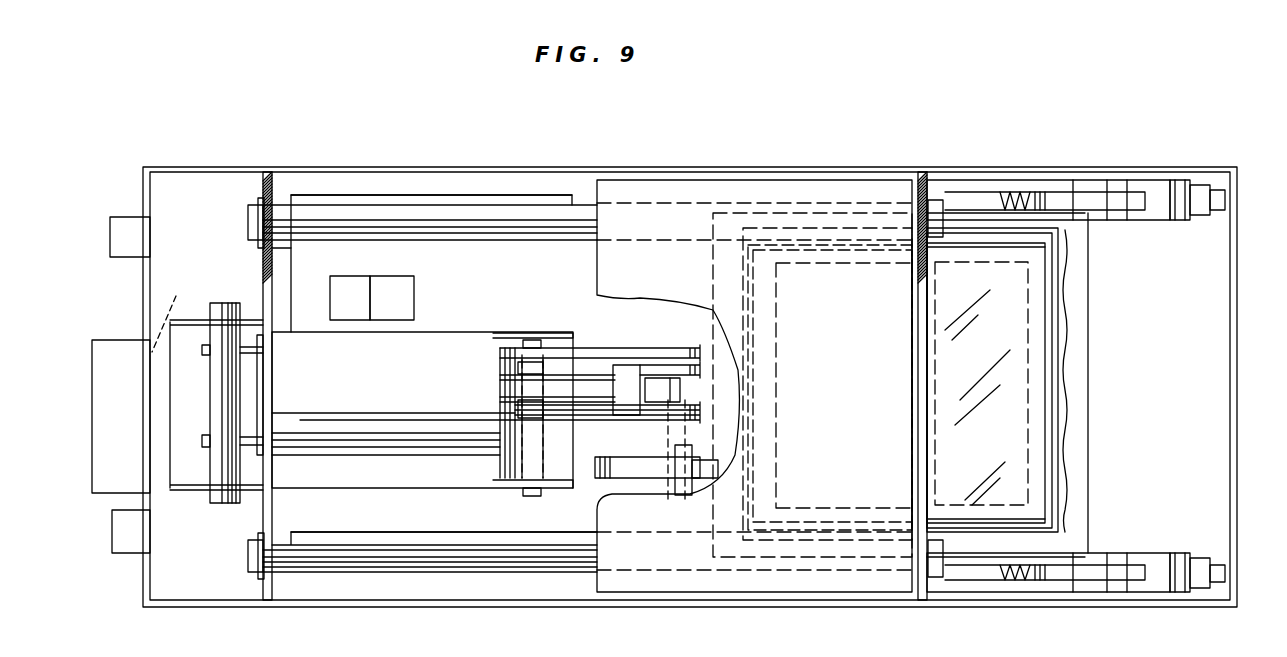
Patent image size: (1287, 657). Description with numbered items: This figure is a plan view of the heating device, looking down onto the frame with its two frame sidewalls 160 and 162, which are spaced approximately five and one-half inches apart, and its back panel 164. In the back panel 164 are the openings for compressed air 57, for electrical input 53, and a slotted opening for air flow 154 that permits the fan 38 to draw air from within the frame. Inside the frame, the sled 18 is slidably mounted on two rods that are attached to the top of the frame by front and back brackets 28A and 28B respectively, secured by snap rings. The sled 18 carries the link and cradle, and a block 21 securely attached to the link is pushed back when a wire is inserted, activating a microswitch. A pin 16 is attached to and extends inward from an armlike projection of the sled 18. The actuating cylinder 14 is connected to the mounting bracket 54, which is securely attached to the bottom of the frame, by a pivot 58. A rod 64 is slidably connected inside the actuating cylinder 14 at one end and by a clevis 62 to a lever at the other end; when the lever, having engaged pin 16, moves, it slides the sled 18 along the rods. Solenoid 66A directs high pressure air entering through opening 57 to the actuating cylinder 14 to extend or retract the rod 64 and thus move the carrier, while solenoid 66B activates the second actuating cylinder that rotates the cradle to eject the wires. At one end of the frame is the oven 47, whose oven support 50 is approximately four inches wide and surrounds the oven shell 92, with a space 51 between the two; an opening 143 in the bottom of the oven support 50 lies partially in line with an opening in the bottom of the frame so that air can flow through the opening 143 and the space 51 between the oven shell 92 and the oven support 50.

The actuating cylinder 14 is at (446, 346).
The pin 16 is at (686, 450).
The sled 18 is at (775, 193).
The block 21 is at (1037, 212).
The front bracket 28A is at (924, 182).
The back bracket 28B is at (273, 182).
The fan 38 is at (120, 350).
The oven 47 is at (1082, 467).
The oven support 50 is at (1065, 362).
The space 51 is at (1060, 320).
The opening for electrical input 53 is at (125, 234).
The mounting bracket 54 is at (184, 495).
The opening for compressed air 57 is at (123, 548).
The pivot 58 is at (223, 503).
The clevis 62 is at (636, 375).
The rod 64 is at (580, 382).
The solenoid 66A is at (352, 292).
The solenoid 66B is at (394, 292).
The oven shell 92 is at (1045, 408).
The opening in the bottom of the oven support 143 is at (788, 358).
The opening for air flow 154 is at (178, 308).
The frame sidewall 160 is at (508, 166).
The frame sidewall 162 is at (486, 598).
The back panel 164 is at (148, 268).